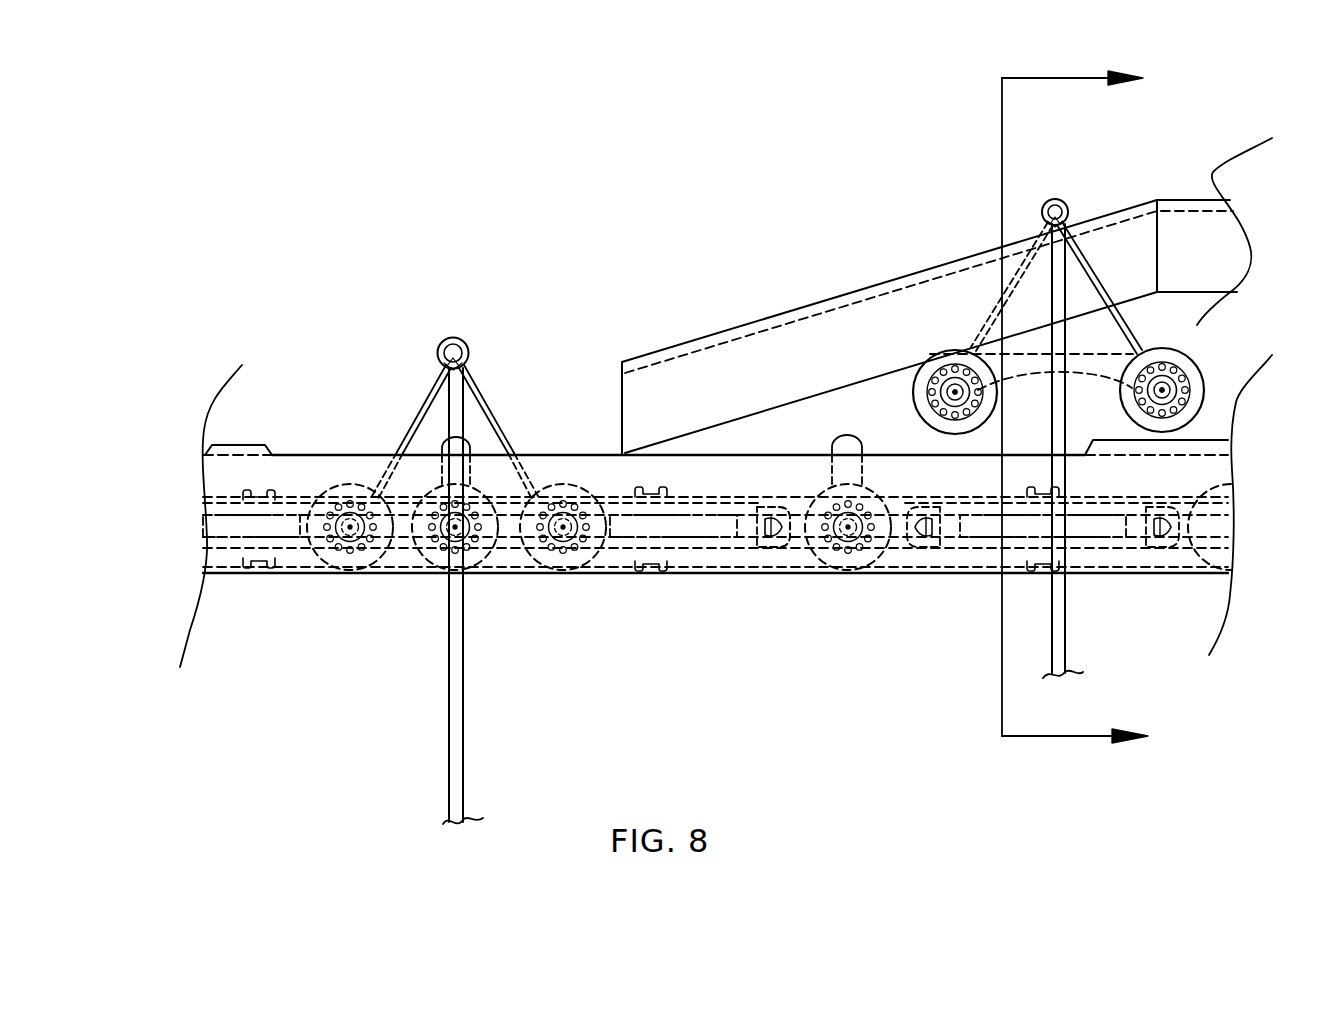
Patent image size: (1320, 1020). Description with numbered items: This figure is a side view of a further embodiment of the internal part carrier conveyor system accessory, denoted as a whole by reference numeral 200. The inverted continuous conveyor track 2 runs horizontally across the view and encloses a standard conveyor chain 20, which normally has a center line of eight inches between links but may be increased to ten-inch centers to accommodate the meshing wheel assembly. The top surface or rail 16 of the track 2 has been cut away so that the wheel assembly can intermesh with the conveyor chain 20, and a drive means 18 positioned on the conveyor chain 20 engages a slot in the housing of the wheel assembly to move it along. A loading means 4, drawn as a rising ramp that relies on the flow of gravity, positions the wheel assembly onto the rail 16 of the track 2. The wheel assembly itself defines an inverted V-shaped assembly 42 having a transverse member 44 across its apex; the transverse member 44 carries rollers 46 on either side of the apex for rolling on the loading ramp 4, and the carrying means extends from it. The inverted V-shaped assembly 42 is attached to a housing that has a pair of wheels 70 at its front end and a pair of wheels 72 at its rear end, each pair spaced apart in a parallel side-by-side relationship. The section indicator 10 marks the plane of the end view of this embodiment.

The further embodiment 200 is at (532, 183).
The inverted continuous conveyor track 2 is at (280, 578).
The rail 16 is at (240, 445).
The loading means 4 is at (658, 351).
The drive means 18 is at (866, 420).
The conveyor chain 20 is at (757, 550).
The inverted V-shaped assembly 42 is at (1042, 210).
The transverse member 44 is at (1052, 200).
The rollers 46 is at (1068, 210).
The pair of wheels 70 is at (918, 382).
The pair of wheels 72 is at (1194, 367).
The section line 10 is at (1105, 408).